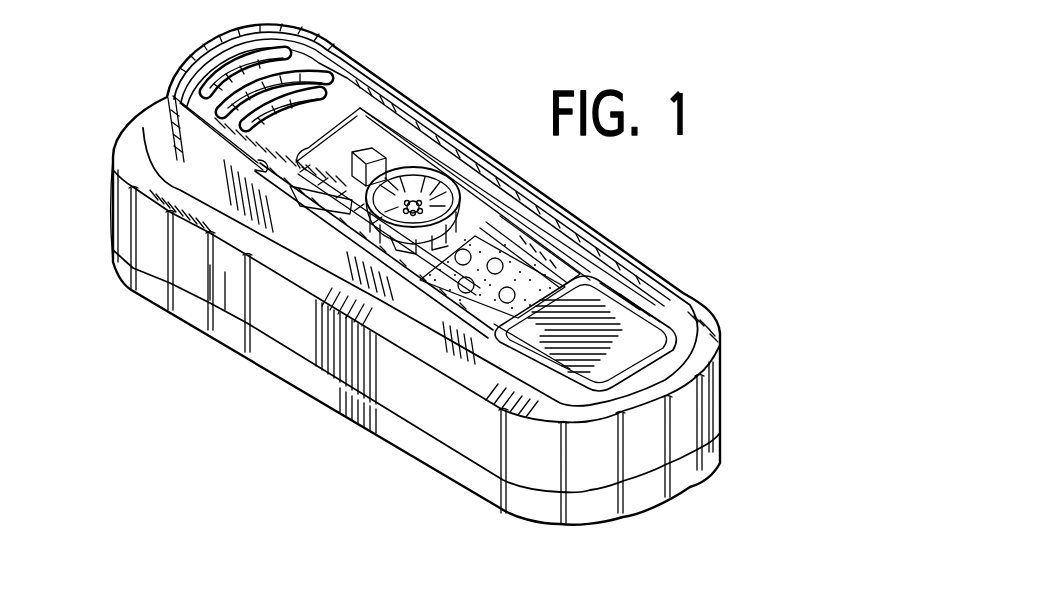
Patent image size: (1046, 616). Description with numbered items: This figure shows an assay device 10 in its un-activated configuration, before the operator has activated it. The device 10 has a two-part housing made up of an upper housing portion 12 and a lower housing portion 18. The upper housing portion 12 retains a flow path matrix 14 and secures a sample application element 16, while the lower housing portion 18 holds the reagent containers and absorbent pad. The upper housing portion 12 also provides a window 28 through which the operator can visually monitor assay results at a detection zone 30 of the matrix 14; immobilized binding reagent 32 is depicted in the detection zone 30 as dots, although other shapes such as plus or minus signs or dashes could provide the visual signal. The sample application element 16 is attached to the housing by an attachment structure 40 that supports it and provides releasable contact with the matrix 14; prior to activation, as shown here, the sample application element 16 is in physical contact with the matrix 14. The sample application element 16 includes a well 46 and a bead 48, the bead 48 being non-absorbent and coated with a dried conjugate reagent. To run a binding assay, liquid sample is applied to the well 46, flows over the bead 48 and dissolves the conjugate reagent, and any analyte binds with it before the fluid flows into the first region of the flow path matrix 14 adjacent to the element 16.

The device 10 is at (166, 38).
The upper housing portion 12 is at (162, 92).
The flow path matrix 14 is at (493, 280).
The sample application element 16 is at (442, 190).
The lower housing portion 18 is at (100, 218).
The window 28 is at (545, 249).
The detection zone 30 is at (558, 290).
The immobilized binding reagent 32 is at (502, 212).
The attachment structure 40 is at (390, 150).
The well 46 is at (348, 204).
The bead 48 is at (457, 166).